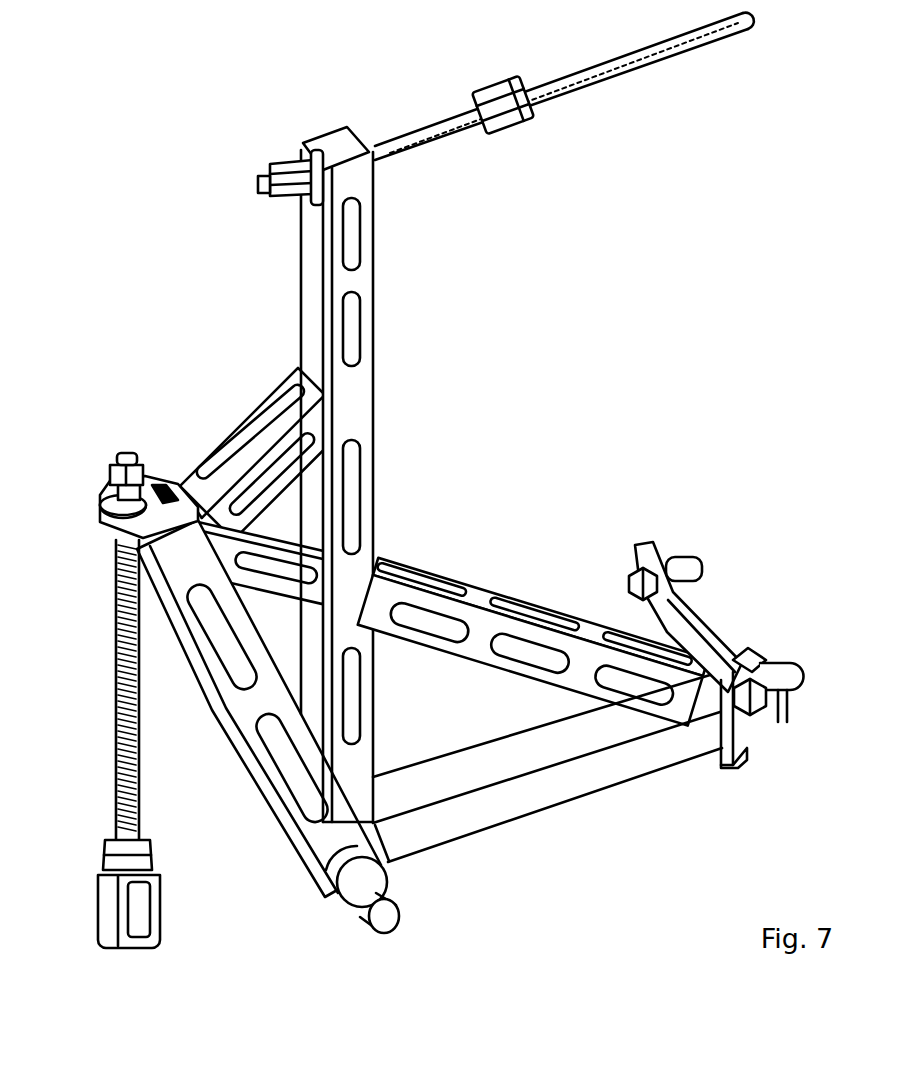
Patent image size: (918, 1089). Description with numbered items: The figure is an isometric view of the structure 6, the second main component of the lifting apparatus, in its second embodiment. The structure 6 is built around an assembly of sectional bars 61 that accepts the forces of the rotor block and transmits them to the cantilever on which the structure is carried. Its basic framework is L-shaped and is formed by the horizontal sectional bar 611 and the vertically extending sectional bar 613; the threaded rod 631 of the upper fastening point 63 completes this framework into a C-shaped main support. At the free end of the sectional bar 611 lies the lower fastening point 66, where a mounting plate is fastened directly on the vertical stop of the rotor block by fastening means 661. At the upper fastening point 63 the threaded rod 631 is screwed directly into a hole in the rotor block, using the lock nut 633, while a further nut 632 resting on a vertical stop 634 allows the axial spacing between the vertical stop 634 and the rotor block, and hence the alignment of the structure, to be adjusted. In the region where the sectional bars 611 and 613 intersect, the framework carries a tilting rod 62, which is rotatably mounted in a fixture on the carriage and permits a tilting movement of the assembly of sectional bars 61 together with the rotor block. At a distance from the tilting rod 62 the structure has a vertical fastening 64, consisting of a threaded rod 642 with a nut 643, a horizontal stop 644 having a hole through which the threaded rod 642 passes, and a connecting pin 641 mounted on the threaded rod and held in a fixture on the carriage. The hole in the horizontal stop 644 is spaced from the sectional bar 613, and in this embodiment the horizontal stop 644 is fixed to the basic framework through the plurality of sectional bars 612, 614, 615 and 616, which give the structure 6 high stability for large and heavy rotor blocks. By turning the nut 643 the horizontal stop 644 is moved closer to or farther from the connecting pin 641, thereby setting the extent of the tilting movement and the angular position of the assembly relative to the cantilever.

The structure 6 is at (563, 370).
The assembly of sectional bars 61 is at (400, 708).
The sectional bar 611 is at (520, 805).
The sectional bar 612 is at (250, 712).
The sectional bar 613 is at (353, 389).
The sectional bar 614 is at (530, 630).
The sectional bar 615 is at (262, 588).
The sectional bar 616 is at (240, 437).
The tilting rod 62 is at (395, 915).
The fastening point 63 is at (748, 101).
The threaded rod 631 is at (595, 78).
The nut 632 is at (285, 197).
The lock nut 633 is at (520, 113).
The vertical stop 634 is at (302, 153).
The vertical fastening 64 is at (90, 803).
The connecting pin 641 is at (140, 912).
The threaded rod 642 is at (123, 710).
The nut 643 is at (117, 492).
The horizontal stop 644 is at (120, 527).
The fastening point 66 is at (748, 723).
The fastening means 661 is at (726, 624).